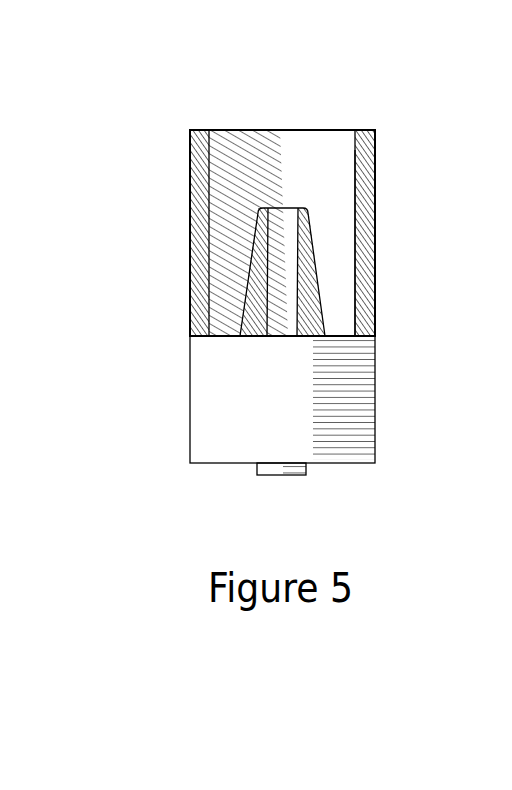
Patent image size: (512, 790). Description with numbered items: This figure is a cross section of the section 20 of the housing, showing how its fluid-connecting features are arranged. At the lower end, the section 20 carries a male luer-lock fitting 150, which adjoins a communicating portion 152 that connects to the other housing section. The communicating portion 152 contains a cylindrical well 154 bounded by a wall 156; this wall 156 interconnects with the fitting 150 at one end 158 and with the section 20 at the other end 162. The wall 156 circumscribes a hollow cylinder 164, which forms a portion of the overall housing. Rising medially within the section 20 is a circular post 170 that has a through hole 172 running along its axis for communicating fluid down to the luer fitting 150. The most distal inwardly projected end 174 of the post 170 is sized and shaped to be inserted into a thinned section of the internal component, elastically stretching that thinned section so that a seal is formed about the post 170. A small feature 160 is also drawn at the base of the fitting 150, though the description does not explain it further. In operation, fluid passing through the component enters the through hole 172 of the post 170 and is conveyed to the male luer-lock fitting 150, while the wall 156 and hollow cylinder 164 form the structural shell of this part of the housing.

The section 20 is at (420, 302).
The male luer-lock fitting 150 is at (383, 412).
The communicating portion 152 is at (385, 242).
The cylindrical well 154 is at (298, 150).
The wall 156 is at (374, 194).
The end 158 is at (376, 333).
The connector 160 is at (344, 464).
The end 162 is at (203, 130).
The hollow cylinder 164 is at (193, 193).
The circular post 170 is at (197, 257).
The through hole 172 is at (374, 160).
The distal inwardly projected end 174 is at (258, 207).